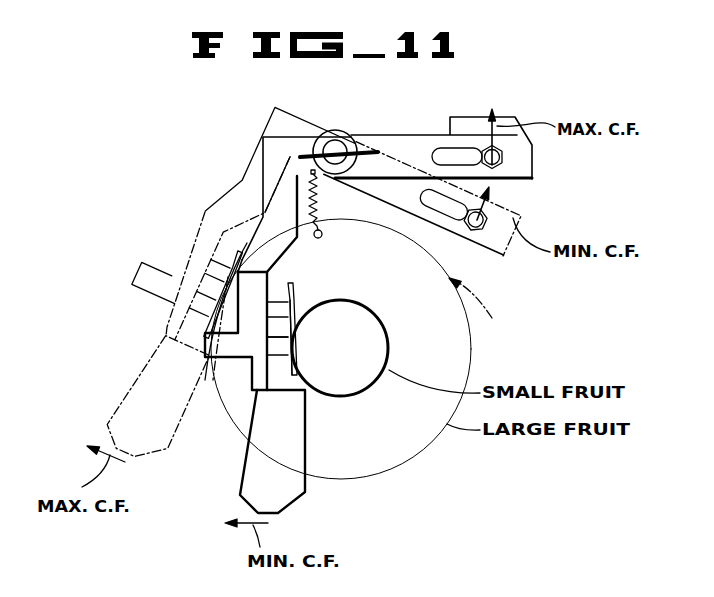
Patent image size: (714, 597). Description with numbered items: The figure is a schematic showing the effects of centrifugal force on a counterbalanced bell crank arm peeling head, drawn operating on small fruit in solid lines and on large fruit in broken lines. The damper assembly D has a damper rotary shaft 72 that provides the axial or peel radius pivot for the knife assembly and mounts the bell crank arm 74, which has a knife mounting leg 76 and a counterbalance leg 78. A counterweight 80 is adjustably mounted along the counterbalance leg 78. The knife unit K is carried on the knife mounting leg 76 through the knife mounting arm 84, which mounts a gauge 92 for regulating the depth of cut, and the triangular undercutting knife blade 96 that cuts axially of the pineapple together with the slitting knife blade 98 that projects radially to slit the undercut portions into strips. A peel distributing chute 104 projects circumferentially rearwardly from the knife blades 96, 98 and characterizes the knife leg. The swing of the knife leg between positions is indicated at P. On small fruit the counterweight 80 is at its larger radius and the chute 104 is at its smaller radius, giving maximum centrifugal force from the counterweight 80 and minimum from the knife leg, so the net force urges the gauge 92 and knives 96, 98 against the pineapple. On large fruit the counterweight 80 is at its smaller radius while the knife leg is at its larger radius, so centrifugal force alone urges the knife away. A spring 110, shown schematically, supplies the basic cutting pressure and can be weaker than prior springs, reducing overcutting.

The damper rotary shaft 72 is at (334, 140).
The bell crank arm 74 is at (405, 133).
The knife mounting leg 76 is at (268, 116).
The counterbalance leg 78 is at (533, 170).
The counterweight 80 is at (494, 118).
The knife mounting arm 84 is at (226, 196).
The gauge 92 is at (290, 276).
The undercutting knife blade 96 is at (300, 375).
The slitting knife blade 98 is at (287, 340).
The peel distributing chute 104 is at (128, 400).
The spring 110 is at (320, 212).
The damper assembly D is at (353, 127).
The knife unit K is at (303, 367).
The pivot path P is at (396, 346).